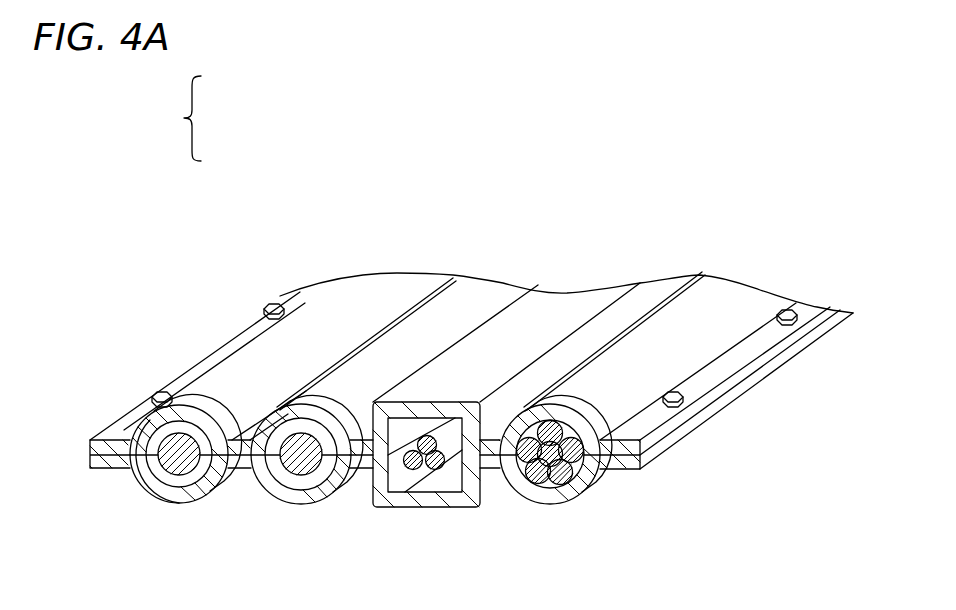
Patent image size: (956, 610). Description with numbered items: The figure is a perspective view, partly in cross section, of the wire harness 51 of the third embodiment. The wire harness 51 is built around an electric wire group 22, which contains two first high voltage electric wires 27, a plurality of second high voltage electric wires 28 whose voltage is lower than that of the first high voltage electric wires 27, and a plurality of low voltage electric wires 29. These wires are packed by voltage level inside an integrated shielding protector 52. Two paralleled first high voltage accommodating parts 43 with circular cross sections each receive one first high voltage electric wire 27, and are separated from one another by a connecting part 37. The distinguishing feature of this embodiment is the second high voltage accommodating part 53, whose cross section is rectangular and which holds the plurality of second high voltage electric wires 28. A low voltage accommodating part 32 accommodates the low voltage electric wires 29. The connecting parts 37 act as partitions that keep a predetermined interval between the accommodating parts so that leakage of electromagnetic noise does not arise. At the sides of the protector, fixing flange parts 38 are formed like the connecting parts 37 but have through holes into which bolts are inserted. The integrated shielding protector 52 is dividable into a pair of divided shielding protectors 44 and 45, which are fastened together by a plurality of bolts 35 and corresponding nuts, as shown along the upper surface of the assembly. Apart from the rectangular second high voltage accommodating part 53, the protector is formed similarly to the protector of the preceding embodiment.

The electric wire group 22 is at (173, 118).
The first high voltage electric wire 27 is at (160, 480).
The second high voltage electric wire 28 is at (425, 470).
The low voltage electric wire 29 is at (553, 506).
The low voltage accommodating part 32 is at (518, 508).
The bolt 35 is at (272, 302).
The connecting part 37 is at (249, 422).
The fixing flange part 38 is at (126, 427).
The first high voltage accommodating part 43 is at (128, 490).
The divided shielding protector 44 is at (211, 372).
The divided shielding protector 45 is at (179, 506).
The wire harness 51 is at (596, 219).
The integrated shielding protector 52 is at (478, 299).
The second high voltage accommodating part 53 is at (388, 508).